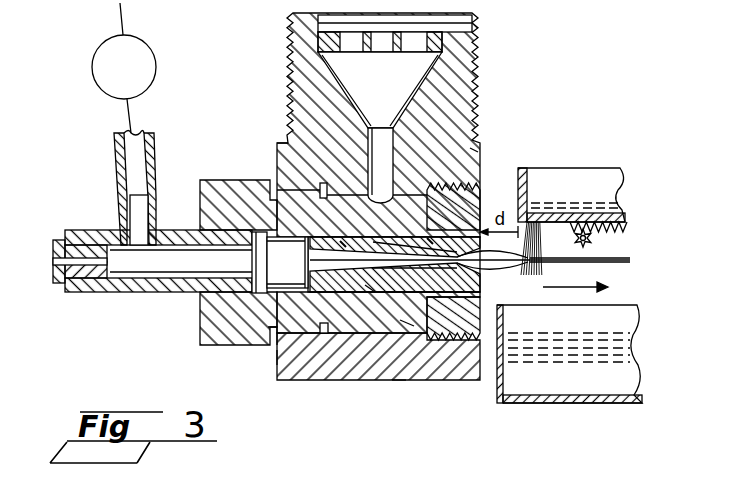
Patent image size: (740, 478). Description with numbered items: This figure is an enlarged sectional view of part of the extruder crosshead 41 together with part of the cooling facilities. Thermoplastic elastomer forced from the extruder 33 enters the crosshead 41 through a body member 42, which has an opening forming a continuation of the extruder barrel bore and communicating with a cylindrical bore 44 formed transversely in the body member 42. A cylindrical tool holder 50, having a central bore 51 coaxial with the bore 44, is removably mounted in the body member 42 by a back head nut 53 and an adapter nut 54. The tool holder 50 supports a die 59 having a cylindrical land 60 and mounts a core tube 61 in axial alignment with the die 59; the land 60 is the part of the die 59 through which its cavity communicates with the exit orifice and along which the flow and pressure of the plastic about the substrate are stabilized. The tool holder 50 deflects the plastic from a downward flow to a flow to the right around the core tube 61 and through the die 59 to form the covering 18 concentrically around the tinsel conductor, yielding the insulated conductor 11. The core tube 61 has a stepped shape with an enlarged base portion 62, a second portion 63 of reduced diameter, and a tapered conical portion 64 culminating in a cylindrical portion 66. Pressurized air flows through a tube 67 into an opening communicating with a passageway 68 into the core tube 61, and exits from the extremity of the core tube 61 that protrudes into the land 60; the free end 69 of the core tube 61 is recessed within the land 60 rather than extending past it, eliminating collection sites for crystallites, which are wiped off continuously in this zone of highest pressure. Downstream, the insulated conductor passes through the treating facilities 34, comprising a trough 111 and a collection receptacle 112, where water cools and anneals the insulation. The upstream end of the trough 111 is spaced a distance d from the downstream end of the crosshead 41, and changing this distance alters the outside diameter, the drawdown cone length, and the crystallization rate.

The insulated conductor 11 is at (612, 263).
The covering 18 is at (531, 268).
The extruder 33 is at (265, 106).
The treating facilities 34 is at (593, 404).
The extruder crosshead 41 is at (270, 357).
The body member 42 is at (293, 365).
The cylindrical bore 44 is at (407, 322).
The cylindrical tool holder 50 is at (354, 315).
The central bore 51 is at (373, 297).
The back head nut 53 is at (213, 312).
The adapter nut 54 is at (435, 242).
The die 59 is at (470, 148).
The cylindrical land 60 is at (455, 235).
The core tube 61 is at (276, 170).
The enlarged base portion 62 is at (276, 358).
The second portion 63 is at (322, 184).
The tapered conical portion 64 is at (399, 382).
The cylindrical portion 66 is at (458, 263).
The tube 67 is at (115, 143).
The passageway 68 is at (142, 258).
The free end 69 is at (473, 323).
The trough 111 is at (527, 183).
The collection receptacle 112 is at (527, 404).